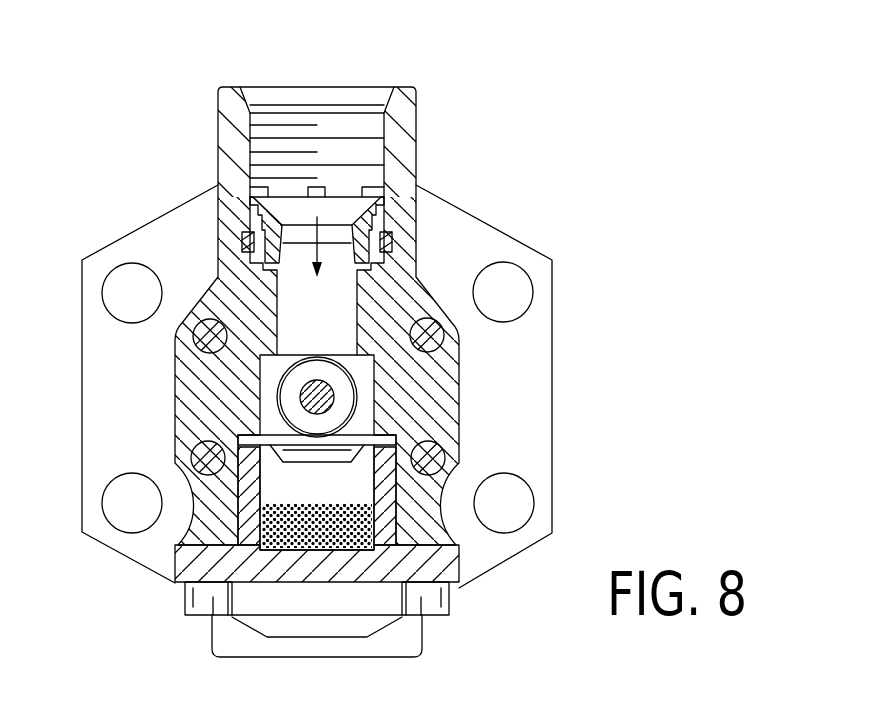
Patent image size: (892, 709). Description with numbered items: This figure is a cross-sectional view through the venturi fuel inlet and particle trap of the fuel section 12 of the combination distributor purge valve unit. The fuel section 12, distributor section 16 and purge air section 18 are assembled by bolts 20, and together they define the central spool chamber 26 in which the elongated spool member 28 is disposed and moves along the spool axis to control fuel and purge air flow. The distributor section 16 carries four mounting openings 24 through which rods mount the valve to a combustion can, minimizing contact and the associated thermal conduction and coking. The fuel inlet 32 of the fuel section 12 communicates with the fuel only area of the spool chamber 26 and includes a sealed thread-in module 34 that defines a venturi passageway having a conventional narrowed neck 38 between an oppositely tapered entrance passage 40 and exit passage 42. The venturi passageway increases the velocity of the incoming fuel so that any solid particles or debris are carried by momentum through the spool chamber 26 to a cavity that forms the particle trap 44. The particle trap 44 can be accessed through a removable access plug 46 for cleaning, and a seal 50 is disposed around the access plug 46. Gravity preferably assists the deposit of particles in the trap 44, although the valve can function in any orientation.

The fuel section 12 is at (472, 387).
The distributor section 16 is at (90, 417).
The purge air section 18 is at (334, 665).
The bolts 20 is at (205, 452).
The mounting openings 24 is at (113, 300).
The central spool chamber 26 is at (358, 420).
The elongated spool member 28 is at (337, 400).
The fuel inlet 32 is at (263, 93).
The sealed thread-in module 34 is at (372, 220).
The narrowed neck 38 is at (285, 235).
The tapered entrance passage 40 is at (358, 200).
The tapered exit passage 42 is at (350, 290).
The particle trap 44 is at (333, 498).
The removable access plug 46 is at (190, 566).
The seal 50 is at (378, 444).